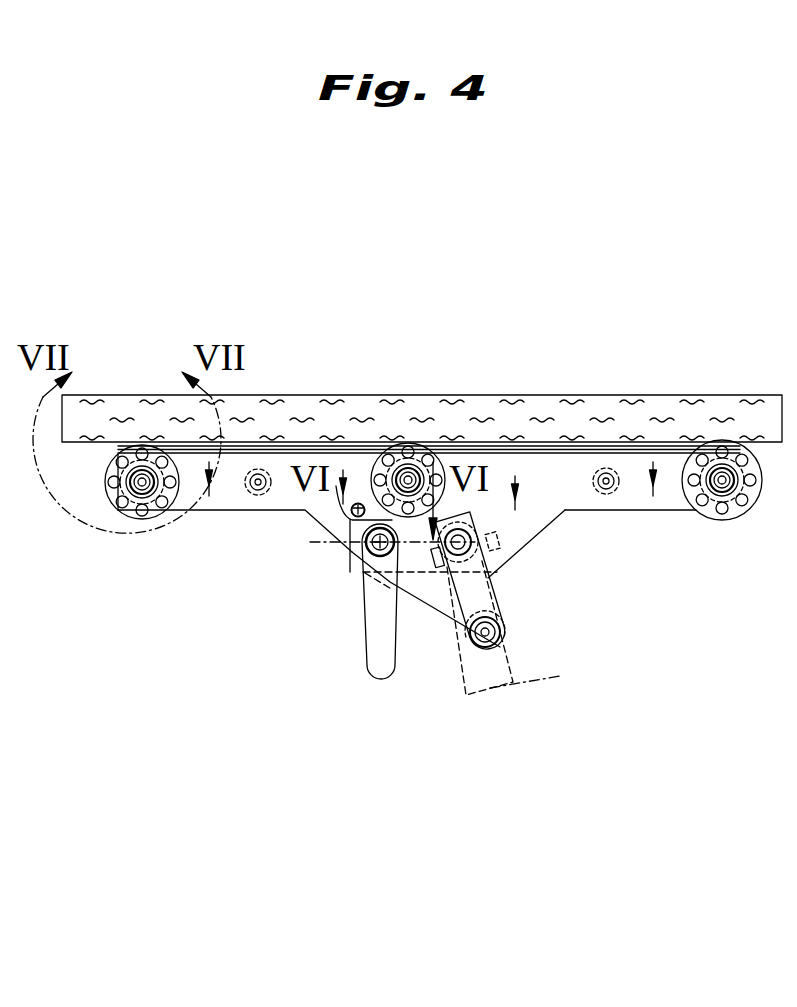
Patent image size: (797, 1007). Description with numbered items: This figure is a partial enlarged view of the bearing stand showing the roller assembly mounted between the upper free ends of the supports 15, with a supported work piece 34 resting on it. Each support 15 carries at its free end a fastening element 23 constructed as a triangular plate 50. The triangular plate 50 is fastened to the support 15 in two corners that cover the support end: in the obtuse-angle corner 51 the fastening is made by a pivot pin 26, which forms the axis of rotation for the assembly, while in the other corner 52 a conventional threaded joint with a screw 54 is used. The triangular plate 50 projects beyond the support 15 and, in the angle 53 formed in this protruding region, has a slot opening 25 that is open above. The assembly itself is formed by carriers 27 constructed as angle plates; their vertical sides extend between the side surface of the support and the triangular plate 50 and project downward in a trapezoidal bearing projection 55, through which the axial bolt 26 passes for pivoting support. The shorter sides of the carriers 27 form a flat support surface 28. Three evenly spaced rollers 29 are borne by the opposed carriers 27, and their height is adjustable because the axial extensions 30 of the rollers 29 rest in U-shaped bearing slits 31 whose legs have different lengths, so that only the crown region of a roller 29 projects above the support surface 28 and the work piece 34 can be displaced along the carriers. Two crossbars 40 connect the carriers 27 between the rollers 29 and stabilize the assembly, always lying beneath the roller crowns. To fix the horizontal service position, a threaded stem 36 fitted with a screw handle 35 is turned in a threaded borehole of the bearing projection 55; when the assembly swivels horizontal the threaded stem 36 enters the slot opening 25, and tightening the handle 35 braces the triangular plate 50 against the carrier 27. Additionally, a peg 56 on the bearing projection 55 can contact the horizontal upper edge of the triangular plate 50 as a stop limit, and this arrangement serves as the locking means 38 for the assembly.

The support 15 is at (497, 672).
The fastening element 23 is at (478, 593).
The slot opening 25 is at (378, 522).
The pivot pin 26 is at (447, 558).
The carrier 27 is at (553, 498).
The support surface 28 is at (640, 444).
The roller 29 is at (110, 478).
The axial extension 30 is at (143, 484).
The bearing slit 31 is at (167, 463).
The work piece 34 is at (440, 418).
The screw handle 35 is at (383, 653).
The threaded stem 36 is at (364, 573).
The locking means 38 is at (361, 614).
The crossbar 40 is at (258, 486).
The triangular plate 50 is at (448, 613).
The obtuse-angle corner 51 is at (472, 512).
The corner 52 is at (500, 637).
The angle 53 is at (330, 520).
The screw 54 is at (500, 647).
The bearing projection 55 is at (500, 545).
The peg 56 is at (357, 503).